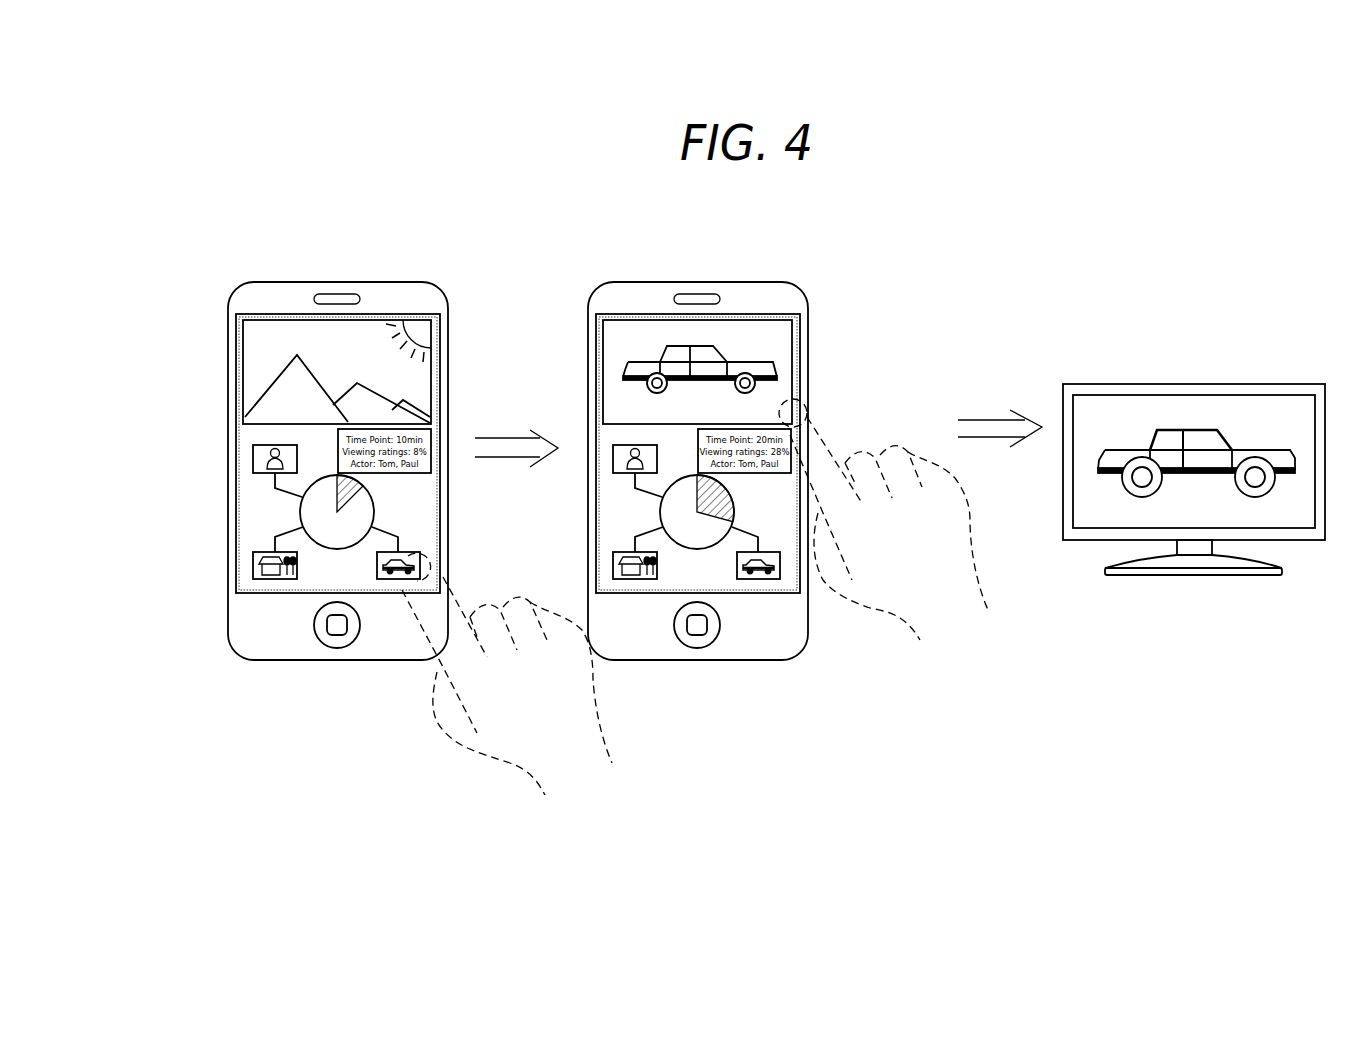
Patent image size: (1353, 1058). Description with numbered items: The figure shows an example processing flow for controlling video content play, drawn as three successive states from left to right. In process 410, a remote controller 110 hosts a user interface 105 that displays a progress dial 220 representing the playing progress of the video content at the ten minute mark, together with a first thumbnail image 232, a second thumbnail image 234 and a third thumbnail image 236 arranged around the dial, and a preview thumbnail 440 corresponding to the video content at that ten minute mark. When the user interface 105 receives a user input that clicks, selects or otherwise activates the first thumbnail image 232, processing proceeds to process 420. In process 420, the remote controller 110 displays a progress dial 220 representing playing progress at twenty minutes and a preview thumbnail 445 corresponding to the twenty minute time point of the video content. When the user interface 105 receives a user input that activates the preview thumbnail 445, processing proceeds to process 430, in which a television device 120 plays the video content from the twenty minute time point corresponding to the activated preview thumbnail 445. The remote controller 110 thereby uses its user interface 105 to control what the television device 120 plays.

The process 410 is at (358, 229).
The process 420 is at (729, 226).
The process 430 is at (1229, 281).
The remote controller 110 is at (397, 282).
The user interface 105 is at (283, 594).
The preview thumbnail 440 is at (428, 364).
The preview thumbnail 445 is at (792, 356).
The third thumbnail image 236 is at (252, 457).
The second thumbnail image 234 is at (252, 566).
The first thumbnail image 232 is at (408, 553).
The progress dial 220 is at (370, 497).
The television device 120 is at (1270, 384).